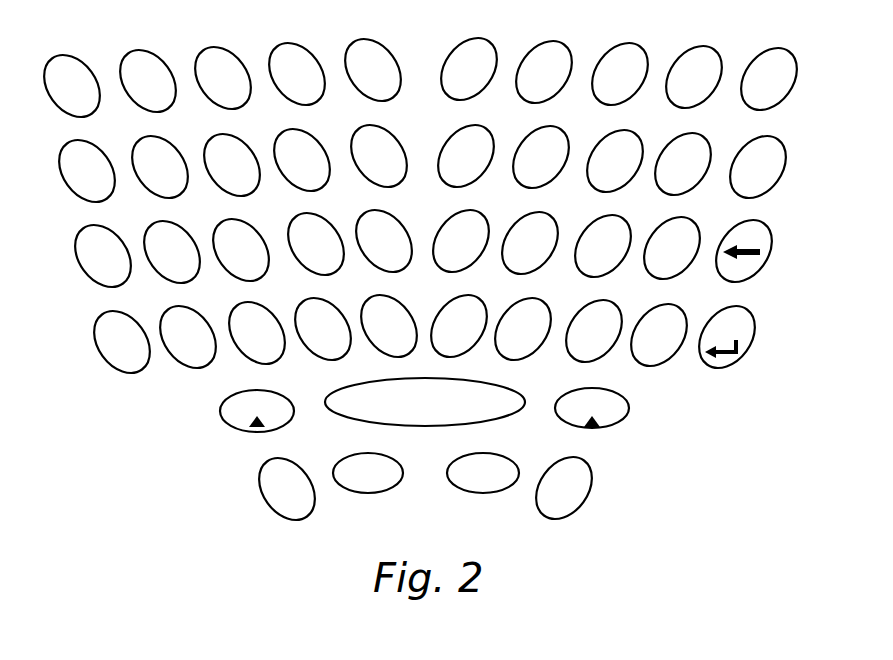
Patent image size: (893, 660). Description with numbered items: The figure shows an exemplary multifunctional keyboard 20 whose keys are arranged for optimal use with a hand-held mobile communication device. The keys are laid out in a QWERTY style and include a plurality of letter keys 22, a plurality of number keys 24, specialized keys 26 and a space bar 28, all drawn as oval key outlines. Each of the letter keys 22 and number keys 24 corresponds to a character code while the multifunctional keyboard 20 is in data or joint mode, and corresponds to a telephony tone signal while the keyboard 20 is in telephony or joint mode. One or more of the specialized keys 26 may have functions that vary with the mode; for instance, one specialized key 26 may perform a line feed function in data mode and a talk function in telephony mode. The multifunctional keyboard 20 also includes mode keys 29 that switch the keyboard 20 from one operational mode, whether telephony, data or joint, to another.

The multifunctional keyboard 20 is at (47, 287).
The letter keys 22 is at (785, 178).
The number keys 24 is at (790, 90).
The specialized keys 26 is at (750, 345).
The space bar 28 is at (427, 427).
The mode keys 29 is at (355, 452).